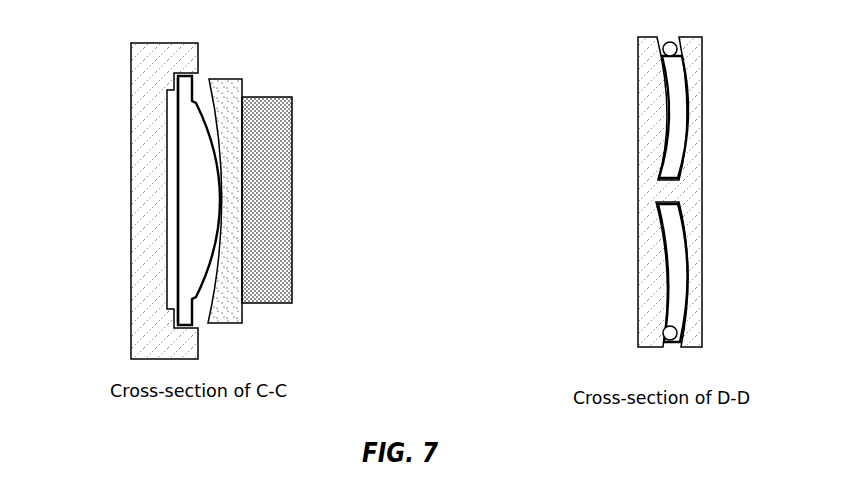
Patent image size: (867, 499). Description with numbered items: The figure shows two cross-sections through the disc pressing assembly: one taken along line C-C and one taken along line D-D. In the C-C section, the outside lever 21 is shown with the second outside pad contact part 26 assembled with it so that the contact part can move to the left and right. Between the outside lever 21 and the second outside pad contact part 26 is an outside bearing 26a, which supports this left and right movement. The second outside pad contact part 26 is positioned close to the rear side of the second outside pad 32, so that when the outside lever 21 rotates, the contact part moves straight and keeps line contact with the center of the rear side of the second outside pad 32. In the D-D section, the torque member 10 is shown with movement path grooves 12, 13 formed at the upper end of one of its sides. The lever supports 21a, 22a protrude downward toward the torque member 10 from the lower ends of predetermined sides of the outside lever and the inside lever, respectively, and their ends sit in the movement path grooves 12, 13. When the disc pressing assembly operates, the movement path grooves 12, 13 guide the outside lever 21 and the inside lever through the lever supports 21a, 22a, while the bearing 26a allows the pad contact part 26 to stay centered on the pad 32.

The torque member 10 is at (703, 202).
The movement path groove 12 is at (677, 275).
The movement path groove 13 is at (677, 142).
The outside lever 21 is at (147, 266).
The lever support 21a is at (675, 332).
The lever support 22a is at (667, 58).
The second outside pad contact part 26 is at (200, 223).
The outside bearing 26a is at (173, 147).
The second outside pad 32 is at (267, 257).